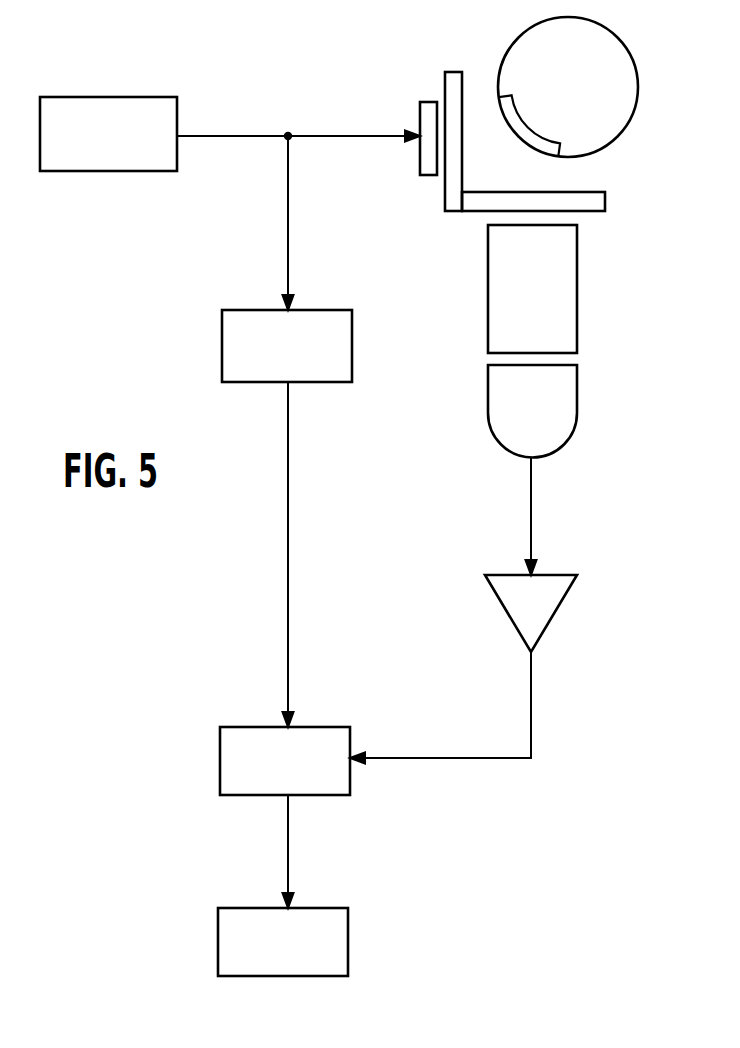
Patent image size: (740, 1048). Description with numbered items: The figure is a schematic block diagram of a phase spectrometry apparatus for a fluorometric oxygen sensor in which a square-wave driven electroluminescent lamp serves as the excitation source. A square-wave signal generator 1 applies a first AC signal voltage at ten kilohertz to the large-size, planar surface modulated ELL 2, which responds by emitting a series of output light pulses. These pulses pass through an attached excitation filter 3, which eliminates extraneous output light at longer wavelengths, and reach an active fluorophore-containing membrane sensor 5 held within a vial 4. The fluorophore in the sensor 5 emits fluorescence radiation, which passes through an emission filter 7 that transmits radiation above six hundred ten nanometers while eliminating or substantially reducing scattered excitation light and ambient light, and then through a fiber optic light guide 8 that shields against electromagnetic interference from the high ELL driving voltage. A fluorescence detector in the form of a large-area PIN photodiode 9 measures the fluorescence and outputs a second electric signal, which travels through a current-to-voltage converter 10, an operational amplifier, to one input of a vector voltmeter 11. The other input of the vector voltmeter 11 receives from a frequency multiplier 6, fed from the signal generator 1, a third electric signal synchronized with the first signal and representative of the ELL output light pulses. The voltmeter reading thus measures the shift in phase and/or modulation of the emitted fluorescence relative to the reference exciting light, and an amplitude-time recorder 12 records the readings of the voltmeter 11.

The square-wave signal generator 1 is at (88, 108).
The ELL 2 is at (425, 103).
The excitation filter 3 is at (457, 78).
The vial 4 is at (633, 97).
The membrane sensor 5 is at (522, 127).
The frequency multiplier 6 is at (327, 320).
The emission filter 7 is at (597, 200).
The fiber optic light guide 8 is at (572, 293).
The PIN photodiode 9 is at (567, 402).
The current-to-voltage converter 10 is at (542, 623).
The vector voltmeter 11 is at (236, 727).
The amplitude-time recorder 12 is at (255, 912).